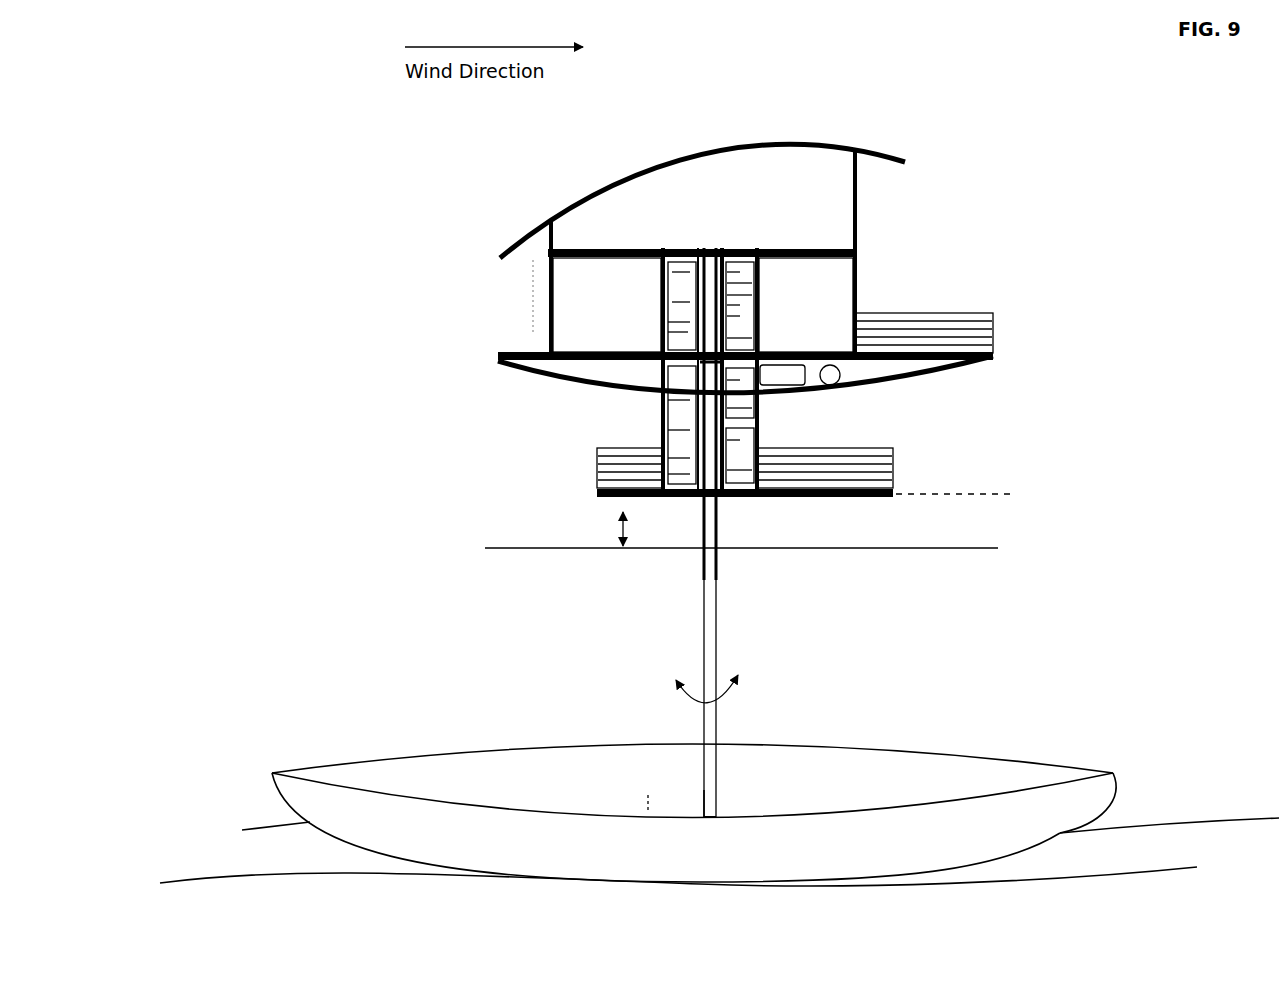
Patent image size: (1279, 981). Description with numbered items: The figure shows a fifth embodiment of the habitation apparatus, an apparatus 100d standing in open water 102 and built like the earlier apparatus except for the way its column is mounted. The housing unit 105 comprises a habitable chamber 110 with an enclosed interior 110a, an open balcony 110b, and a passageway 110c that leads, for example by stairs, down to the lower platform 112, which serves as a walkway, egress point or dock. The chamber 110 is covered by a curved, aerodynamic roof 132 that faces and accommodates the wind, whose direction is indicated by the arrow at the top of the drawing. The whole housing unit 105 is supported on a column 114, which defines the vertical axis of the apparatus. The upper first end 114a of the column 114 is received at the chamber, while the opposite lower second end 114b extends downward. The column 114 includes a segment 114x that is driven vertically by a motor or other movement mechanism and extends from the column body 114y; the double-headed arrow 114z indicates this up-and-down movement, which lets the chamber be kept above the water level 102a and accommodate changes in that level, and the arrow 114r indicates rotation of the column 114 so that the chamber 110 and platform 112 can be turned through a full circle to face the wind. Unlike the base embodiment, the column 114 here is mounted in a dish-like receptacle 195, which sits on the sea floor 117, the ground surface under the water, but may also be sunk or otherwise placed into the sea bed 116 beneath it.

The apparatus 100d is at (404, 240).
The housing unit 105 is at (480, 297).
The habitable chamber 110 is at (515, 315).
The interior 110a is at (631, 311).
The balcony 110b is at (930, 209).
The passageway 110c is at (675, 422).
The lower platform 112 is at (596, 455).
The column 114 is at (720, 634).
The first end of column 114a is at (710, 421).
The second end of column 114b is at (717, 806).
The rotational movement arrow 114r is at (700, 708).
The column segment 114x is at (697, 373).
The column body 114y is at (703, 782).
The vertical movement arrow 114z is at (618, 532).
The roof 132 is at (557, 212).
The open water 102 is at (999, 637).
The water level 102a is at (910, 529).
The dish-like receptacle 195 is at (727, 869).
The sea bed 116 is at (1083, 936).
The sea floor 117 is at (1261, 856).